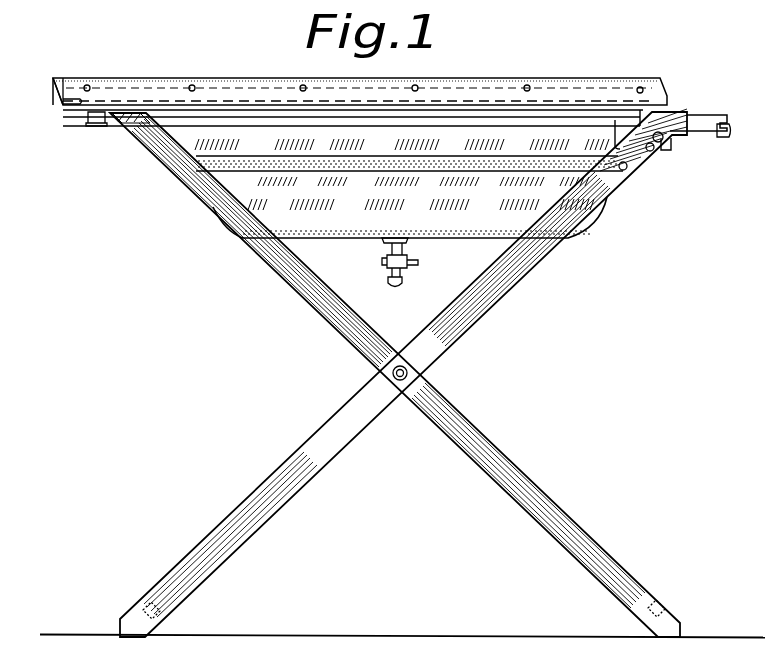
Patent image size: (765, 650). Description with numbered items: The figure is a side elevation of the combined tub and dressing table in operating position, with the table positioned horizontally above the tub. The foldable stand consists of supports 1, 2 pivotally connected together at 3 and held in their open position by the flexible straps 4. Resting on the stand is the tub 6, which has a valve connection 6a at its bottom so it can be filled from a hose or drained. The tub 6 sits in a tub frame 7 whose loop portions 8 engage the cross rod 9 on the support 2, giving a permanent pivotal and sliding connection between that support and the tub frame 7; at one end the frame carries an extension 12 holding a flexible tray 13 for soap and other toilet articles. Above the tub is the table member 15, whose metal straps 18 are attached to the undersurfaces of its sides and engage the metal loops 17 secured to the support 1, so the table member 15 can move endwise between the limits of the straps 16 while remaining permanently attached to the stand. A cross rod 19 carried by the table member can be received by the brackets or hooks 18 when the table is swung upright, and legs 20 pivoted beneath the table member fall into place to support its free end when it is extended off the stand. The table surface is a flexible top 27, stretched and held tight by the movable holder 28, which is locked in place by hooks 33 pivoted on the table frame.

The support 1 is at (292, 270).
The support 2 is at (504, 274).
The pivotal connection 3 is at (390, 372).
The flexible straps 4 is at (520, 168).
The tub 6 is at (342, 224).
The valve connection 6a is at (408, 280).
The tub frame 7 is at (566, 110).
The loop portions 8 is at (667, 152).
The cross rod 9 is at (655, 148).
The extension 12 is at (700, 115).
The flexible tray 13 is at (712, 138).
The table member 15 is at (228, 100).
The straps 16 is at (478, 115).
The metal loops 17 is at (128, 118).
The metal straps 18 is at (95, 126).
The cross rod 19 is at (537, 88).
The legs 20 is at (607, 88).
The flexible top 27 is at (644, 92).
The movable holder 28 is at (52, 88).
The hooks 33 is at (68, 104).